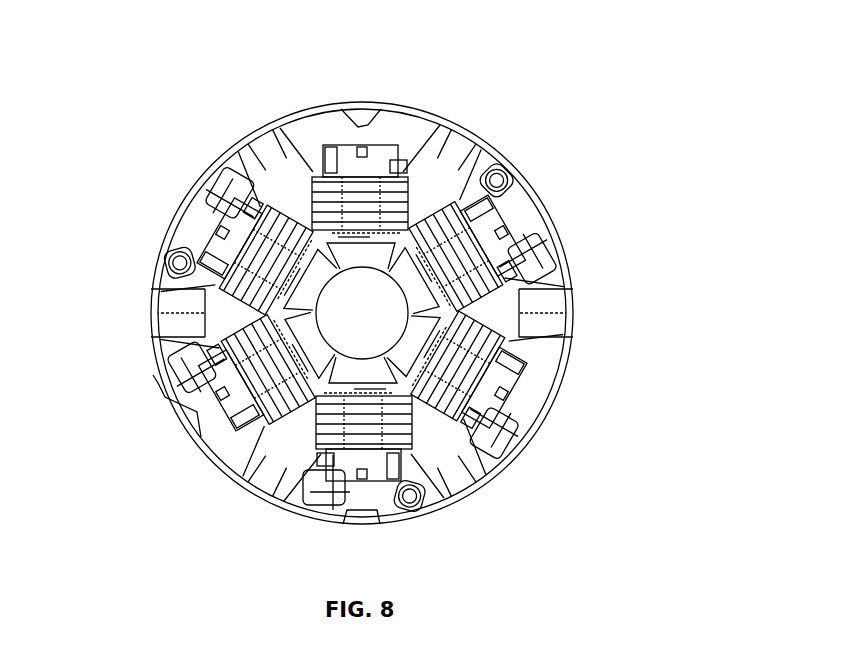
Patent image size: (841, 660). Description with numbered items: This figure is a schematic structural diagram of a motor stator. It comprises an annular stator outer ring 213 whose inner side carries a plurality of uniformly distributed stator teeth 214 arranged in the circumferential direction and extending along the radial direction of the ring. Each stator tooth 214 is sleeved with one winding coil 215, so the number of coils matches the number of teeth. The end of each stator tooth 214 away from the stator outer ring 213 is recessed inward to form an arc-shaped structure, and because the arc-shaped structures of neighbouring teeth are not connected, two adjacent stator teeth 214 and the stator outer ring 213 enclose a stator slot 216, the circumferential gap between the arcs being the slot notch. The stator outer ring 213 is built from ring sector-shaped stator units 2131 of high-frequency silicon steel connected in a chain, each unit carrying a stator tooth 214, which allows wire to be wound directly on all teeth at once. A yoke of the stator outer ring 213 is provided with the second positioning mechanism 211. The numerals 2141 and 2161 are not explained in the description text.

The second positioning mechanism 211 is at (182, 214).
The stator outer ring 213 is at (150, 319).
The stator unit 2131 is at (281, 120).
The stator tooth 214 is at (410, 290).
The stator tooth 2141 is at (437, 218).
The winding coil 215 is at (450, 377).
The stator slot 216 is at (433, 440).
The pole shoe 2161 is at (305, 315).